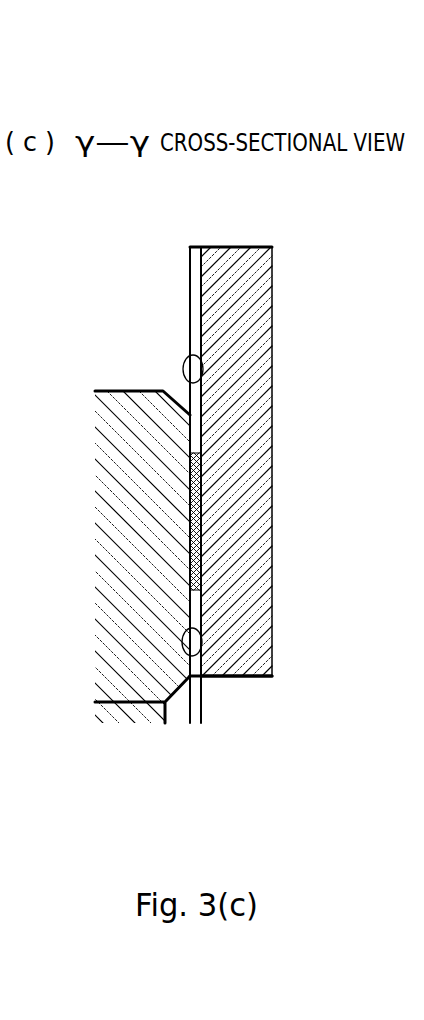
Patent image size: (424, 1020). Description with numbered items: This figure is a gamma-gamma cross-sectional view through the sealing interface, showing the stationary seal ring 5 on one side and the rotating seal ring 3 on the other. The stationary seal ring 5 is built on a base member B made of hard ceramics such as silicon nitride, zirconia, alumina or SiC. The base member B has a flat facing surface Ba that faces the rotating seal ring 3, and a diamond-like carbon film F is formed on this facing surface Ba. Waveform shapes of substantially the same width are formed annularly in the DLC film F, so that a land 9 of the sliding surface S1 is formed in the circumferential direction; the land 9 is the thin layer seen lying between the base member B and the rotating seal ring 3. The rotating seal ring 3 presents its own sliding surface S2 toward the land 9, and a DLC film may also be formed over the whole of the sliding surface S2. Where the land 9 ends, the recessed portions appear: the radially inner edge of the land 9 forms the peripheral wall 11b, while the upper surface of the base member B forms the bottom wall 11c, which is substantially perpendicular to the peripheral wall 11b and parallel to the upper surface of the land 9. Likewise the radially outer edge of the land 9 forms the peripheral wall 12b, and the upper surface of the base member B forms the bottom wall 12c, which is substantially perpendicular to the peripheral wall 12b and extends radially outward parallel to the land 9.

The base member B is at (245, 262).
The rotating seal ring 3 is at (118, 716).
The stationary seal ring 5 is at (243, 691).
The land 9 is at (188, 577).
The DLC film F is at (190, 498).
The facing surface Ba is at (190, 548).
The sliding surface S1 is at (190, 328).
The sliding surface S2 is at (193, 472).
The peripheral wall 11b is at (202, 598).
The bottom wall 11c is at (203, 650).
The peripheral wall 12b is at (201, 446).
The bottom wall 12c is at (204, 372).